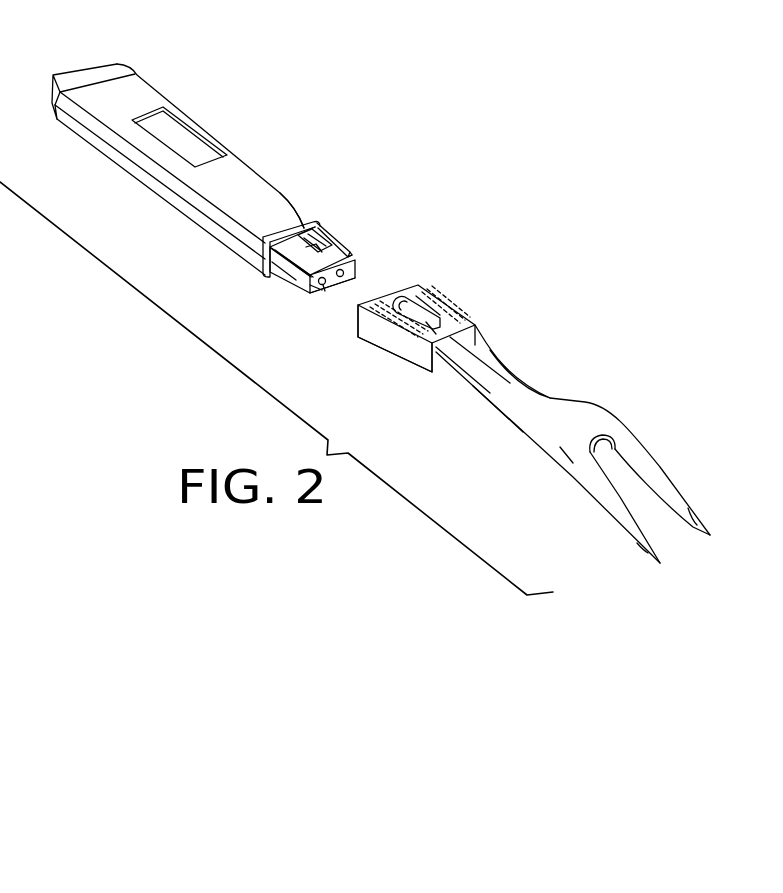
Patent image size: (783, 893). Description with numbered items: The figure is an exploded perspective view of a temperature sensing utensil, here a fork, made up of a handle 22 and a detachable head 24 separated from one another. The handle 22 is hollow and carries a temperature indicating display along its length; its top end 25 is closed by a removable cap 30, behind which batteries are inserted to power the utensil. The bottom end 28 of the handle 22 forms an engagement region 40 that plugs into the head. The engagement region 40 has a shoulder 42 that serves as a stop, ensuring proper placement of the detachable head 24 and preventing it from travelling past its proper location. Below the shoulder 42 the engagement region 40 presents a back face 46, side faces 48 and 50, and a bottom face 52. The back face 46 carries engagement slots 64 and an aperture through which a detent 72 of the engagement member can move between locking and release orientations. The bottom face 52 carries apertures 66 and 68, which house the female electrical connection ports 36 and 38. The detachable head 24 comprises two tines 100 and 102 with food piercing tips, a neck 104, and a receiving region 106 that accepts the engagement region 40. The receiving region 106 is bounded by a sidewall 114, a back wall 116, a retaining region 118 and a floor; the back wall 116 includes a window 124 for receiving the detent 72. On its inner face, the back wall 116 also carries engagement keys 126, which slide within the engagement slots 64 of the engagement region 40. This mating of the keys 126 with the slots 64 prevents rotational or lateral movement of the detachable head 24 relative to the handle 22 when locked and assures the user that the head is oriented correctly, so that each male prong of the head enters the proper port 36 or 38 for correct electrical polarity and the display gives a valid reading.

The handle 22 is at (220, 138).
The detachable head 24 is at (565, 400).
The top end 25 is at (143, 77).
The bottom end 28 is at (297, 217).
The cap 30 is at (85, 70).
The electrical connection port 36 is at (316, 297).
The electrical connection port 38 is at (344, 273).
The engagement region 40 is at (340, 237).
The shoulder 42 is at (262, 250).
The back face 46 is at (353, 260).
The side face 48 is at (287, 282).
The side face 50 is at (355, 270).
The bottom face 52 is at (320, 288).
The engagement slots 64 is at (330, 260).
The aperture 66 is at (310, 281).
The aperture 68 is at (341, 288).
The detent 72 is at (313, 228).
The tine 100 is at (688, 508).
The tine 102 is at (628, 533).
The neck 104 is at (495, 418).
The receiving region 106 is at (406, 357).
The sidewall 114 is at (374, 340).
The back wall 116 is at (452, 310).
The retaining region 118 is at (409, 314).
The window 124 is at (430, 327).
The engagement keys 126 is at (395, 330).